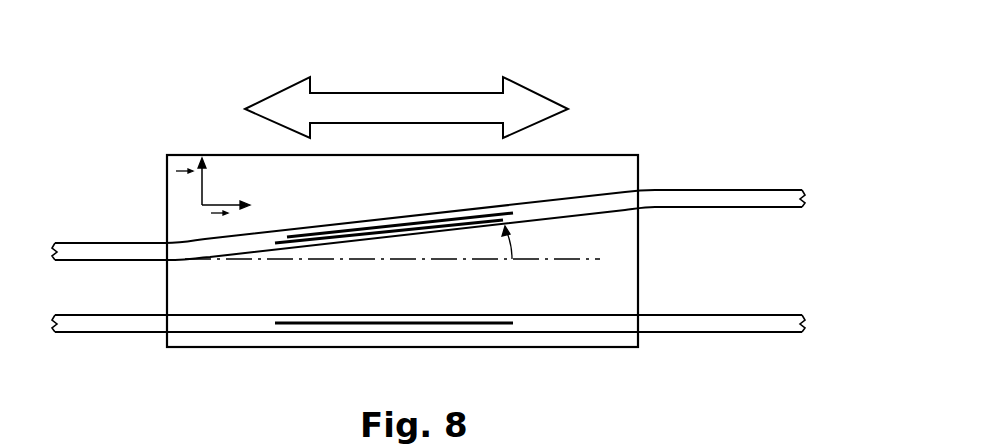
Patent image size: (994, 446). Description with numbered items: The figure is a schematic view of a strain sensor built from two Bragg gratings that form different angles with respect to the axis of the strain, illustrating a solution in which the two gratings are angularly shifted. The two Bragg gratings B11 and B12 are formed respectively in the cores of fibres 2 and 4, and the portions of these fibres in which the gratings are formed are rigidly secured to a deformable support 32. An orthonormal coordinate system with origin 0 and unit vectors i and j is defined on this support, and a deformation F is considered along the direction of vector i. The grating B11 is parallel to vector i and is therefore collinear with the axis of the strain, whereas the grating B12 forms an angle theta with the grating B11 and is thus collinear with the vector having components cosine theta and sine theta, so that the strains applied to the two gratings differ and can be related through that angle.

The fibre 2 is at (117, 332).
The fibre 4 is at (93, 245).
The deformable support 32 is at (613, 157).
The Bragg grating B11 is at (367, 323).
The Bragg grating B12 is at (390, 225).
The deformation F is at (410, 93).
The origin of the orthonormal coordinate system 0 is at (187, 218).